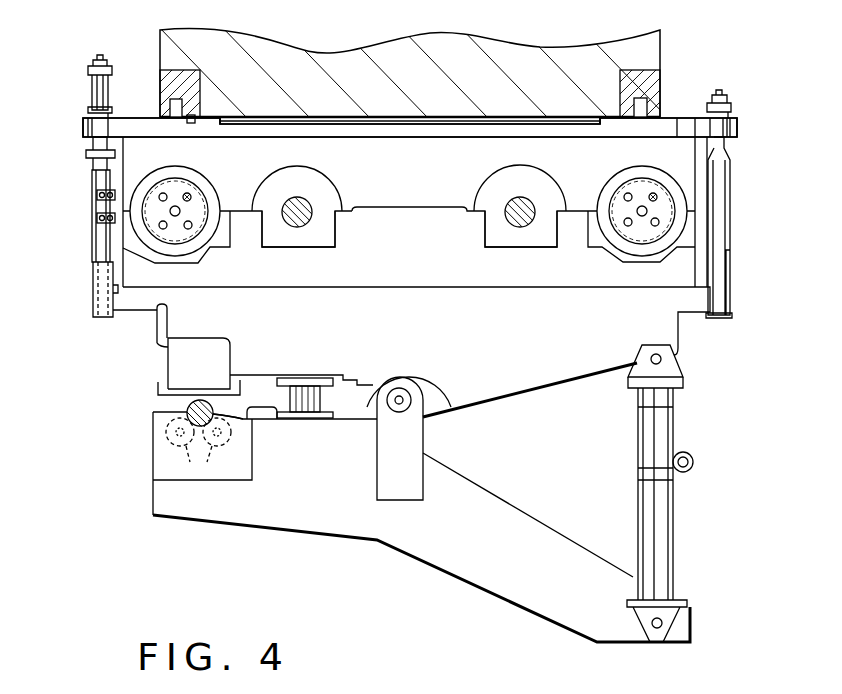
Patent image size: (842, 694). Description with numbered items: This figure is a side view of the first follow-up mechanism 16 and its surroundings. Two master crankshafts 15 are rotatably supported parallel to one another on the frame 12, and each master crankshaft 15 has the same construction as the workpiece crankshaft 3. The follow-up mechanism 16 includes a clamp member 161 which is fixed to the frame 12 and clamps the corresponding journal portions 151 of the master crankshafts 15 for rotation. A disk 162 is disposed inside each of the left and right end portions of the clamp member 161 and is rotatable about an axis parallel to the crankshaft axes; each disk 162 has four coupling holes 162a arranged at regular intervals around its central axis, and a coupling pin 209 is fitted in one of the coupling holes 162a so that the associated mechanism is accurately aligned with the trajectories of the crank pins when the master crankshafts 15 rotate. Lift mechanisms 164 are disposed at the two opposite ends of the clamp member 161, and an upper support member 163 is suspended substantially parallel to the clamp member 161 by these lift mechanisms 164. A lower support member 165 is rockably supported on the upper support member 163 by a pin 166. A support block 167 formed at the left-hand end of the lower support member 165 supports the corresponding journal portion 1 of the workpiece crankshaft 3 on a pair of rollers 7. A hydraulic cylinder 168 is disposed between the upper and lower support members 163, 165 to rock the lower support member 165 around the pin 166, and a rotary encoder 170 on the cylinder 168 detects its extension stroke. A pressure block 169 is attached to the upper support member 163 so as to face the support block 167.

The journal portion 1 is at (187, 410).
The crankshaft 3 is at (228, 416).
The rollers 7 is at (198, 446).
The frame 12 is at (573, 56).
The master crankshaft 15 is at (330, 247).
The follow-up mechanism 16 is at (699, 55).
The journal portion 151 is at (307, 200).
The clamp member 161 is at (436, 147).
The disk 162 is at (183, 184).
The coupling holes 162a is at (163, 193).
The upper support member 163 is at (527, 390).
The lift mechanisms 164 is at (96, 170).
The lower support member 165 is at (468, 582).
The pin 166 is at (399, 396).
The support block 167 is at (160, 458).
The hydraulic cylinder 168 is at (665, 540).
The pressure block 169 is at (240, 355).
The rotary encoder 170 is at (685, 452).
The coupling pins 209 is at (190, 196).